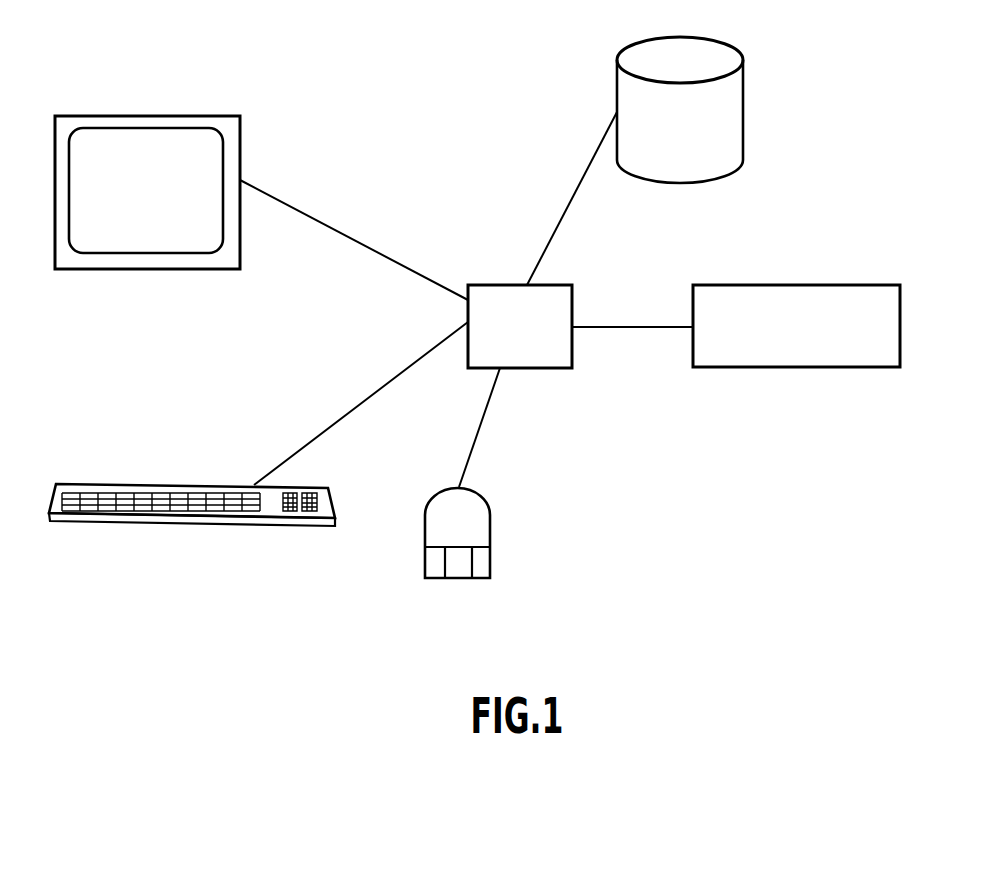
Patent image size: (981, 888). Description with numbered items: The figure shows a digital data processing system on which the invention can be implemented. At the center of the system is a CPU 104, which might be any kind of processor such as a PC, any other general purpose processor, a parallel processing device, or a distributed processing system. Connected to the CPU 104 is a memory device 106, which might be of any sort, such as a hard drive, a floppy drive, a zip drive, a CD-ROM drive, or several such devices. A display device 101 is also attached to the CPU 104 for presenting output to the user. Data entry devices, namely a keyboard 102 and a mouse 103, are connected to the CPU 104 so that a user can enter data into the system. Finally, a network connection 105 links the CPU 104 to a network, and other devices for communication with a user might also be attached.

The display device 101 is at (184, 115).
The keyboard 102 is at (150, 528).
The mouse 103 is at (490, 537).
The CPU 104 is at (518, 368).
The network connection 105 is at (780, 367).
The memory device 106 is at (722, 42).